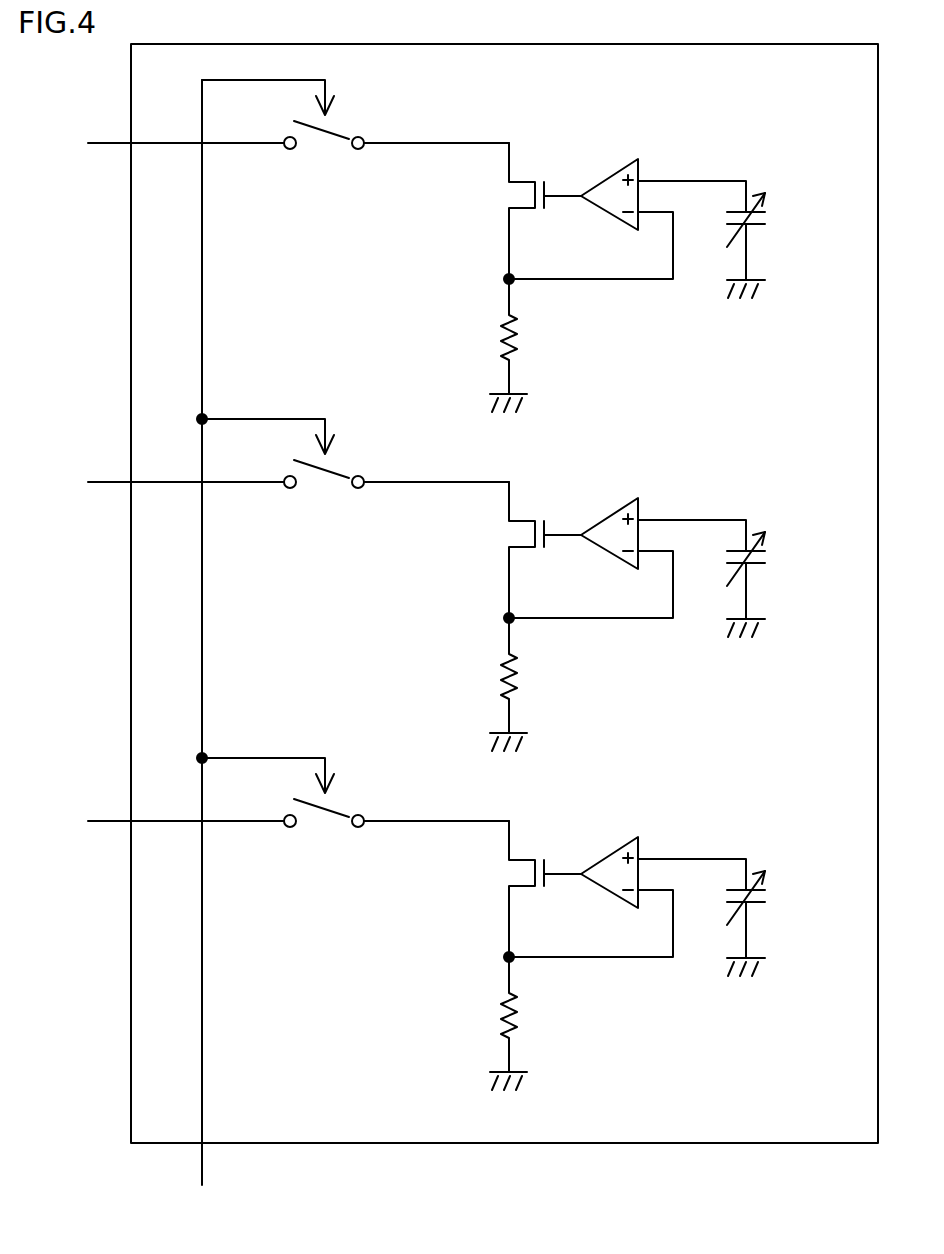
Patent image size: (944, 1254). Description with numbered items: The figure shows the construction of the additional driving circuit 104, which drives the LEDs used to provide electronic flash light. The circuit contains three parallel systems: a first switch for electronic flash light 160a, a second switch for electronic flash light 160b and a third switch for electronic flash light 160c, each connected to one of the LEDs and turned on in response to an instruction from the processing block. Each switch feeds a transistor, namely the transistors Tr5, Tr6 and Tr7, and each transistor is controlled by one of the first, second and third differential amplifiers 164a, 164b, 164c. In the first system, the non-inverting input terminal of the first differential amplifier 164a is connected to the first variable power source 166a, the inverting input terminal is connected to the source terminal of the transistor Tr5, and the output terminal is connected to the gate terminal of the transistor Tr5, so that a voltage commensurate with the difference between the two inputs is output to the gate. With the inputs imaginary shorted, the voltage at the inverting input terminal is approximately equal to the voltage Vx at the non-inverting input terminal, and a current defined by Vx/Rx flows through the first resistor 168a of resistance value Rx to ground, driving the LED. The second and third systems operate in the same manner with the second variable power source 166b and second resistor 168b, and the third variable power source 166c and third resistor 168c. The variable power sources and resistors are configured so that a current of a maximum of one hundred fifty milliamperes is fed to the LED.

The additional driving circuit 104 is at (528, 1237).
The first switch for electronic flash light 160a is at (327, 153).
The second switch for electronic flash light 160b is at (298, 514).
The third switch for electronic flash light 160c is at (298, 853).
The transistor Tr5 is at (507, 193).
The transistor Tr6 is at (498, 550).
The transistor Tr7 is at (498, 889).
The first differential amplifier 164a is at (610, 175).
The second differential amplifier 164b is at (591, 533).
The third differential amplifier 164c is at (591, 872).
The first variable power source 166a is at (749, 239).
The second variable power source 166b is at (749, 578).
The third variable power source 166c is at (749, 917).
The first resistor 168a is at (546, 345).
The second resistor 168b is at (559, 684).
The third resistor 168c is at (559, 1023).
The voltage at the non-inverting input terminal Vx is at (788, 214).
The resistance value Rx is at (481, 339).